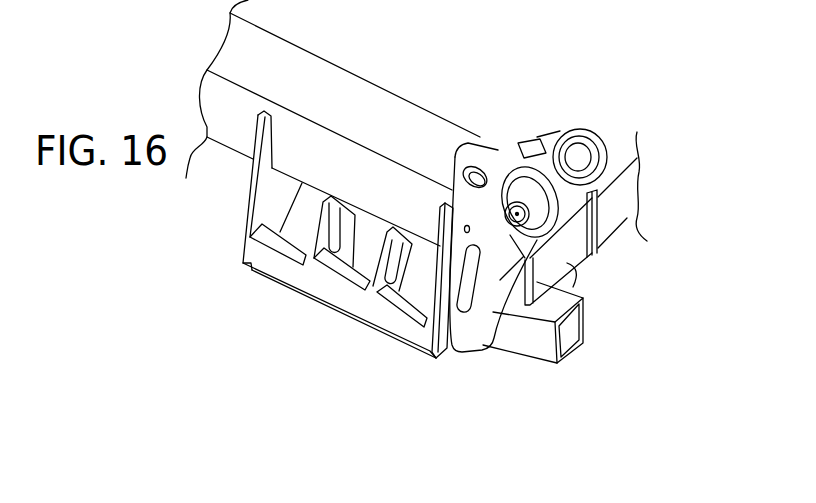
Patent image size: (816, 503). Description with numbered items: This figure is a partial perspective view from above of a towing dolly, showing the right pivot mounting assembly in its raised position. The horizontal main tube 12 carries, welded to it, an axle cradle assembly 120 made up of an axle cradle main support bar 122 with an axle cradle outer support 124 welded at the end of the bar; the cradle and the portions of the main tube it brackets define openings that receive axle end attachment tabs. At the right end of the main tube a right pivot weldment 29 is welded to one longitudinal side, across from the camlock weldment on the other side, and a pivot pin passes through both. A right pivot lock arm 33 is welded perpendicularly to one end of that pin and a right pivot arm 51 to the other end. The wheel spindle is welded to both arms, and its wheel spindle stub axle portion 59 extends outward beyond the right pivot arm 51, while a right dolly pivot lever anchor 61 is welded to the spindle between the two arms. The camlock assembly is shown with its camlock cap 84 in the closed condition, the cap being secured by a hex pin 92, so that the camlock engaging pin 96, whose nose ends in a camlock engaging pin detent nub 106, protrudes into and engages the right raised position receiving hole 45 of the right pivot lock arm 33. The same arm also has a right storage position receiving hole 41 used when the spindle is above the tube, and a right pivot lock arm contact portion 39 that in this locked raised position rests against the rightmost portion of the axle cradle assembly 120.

The main tube 12 is at (384, 123).
The axle cradle outer support 124 is at (259, 201).
The axle cradle main support bar 122 is at (258, 266).
The axle cradle assembly 120 is at (284, 299).
The right pivot lock arm contact portion 39 is at (423, 309).
The right storage position receiving hole 41 is at (455, 157).
The right pivot lock arm 33 is at (503, 241).
The camlock engaging pin detent nub 106 is at (520, 213).
The camlock engaging pin 96 is at (502, 198).
The right pivot weldment 29 is at (550, 150).
The right pivot arm 51 is at (590, 137).
The hex pin 92 is at (523, 146).
The camlock cap 84 is at (605, 180).
The wheel spindle stub axle portion 59 is at (612, 226).
The right raised position receiving hole 45 is at (573, 263).
The right dolly pivot lever anchor 61 is at (523, 348).